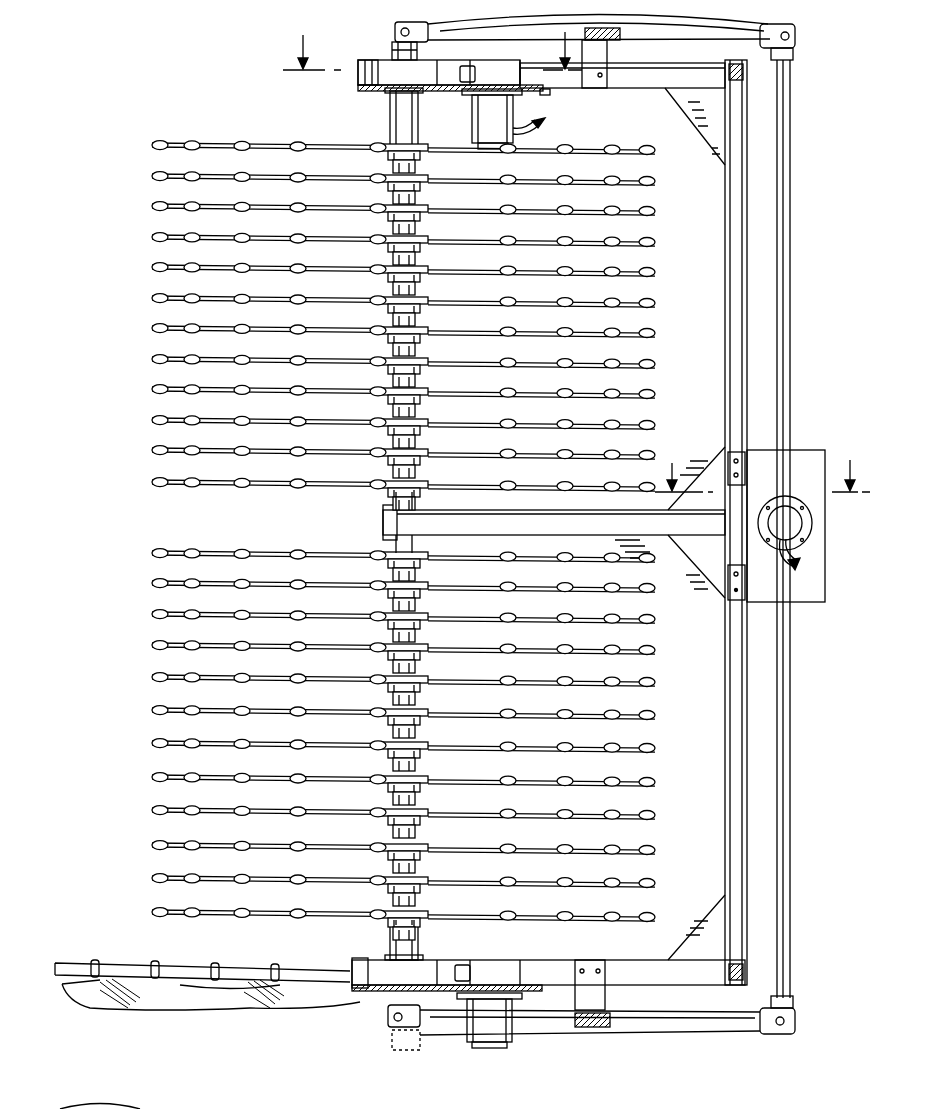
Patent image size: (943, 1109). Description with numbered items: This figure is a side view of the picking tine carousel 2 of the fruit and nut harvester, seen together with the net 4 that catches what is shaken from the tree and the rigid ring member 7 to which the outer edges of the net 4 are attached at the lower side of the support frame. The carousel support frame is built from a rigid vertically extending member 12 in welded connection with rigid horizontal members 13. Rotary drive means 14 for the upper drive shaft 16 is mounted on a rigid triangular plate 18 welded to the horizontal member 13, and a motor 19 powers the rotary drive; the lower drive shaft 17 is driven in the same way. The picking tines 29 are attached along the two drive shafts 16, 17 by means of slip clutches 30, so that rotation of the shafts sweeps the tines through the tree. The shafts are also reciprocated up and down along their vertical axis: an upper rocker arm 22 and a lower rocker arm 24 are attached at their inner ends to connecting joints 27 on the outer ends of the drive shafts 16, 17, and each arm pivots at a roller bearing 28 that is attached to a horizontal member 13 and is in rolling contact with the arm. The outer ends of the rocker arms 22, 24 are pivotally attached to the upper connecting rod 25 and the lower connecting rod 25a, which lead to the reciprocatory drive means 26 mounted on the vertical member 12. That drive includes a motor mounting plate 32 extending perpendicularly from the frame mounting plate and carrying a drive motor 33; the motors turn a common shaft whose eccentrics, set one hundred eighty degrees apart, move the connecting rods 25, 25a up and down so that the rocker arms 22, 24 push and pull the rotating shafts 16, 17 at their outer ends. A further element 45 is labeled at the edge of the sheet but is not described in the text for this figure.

The picking tine carousel 2 is at (80, 751).
The net 4 is at (185, 993).
The rigid ring member 7 is at (70, 963).
The vertically extending member 12 is at (726, 346).
The horizontal member 13 is at (645, 78).
The rotary drive means 14 is at (362, 54).
The drive shaft 16 is at (404, 122).
The drive shaft 17 is at (405, 942).
The rigid triangular plate 18 is at (368, 88).
The motor 19 is at (520, 113).
The rocker arm 22 is at (586, 74).
The rocker arm 24 is at (683, 1022).
The connecting rod 25 is at (792, 80).
The connecting rod 25a is at (790, 902).
The reciprocatory drive means 26 is at (800, 498).
The connecting joint 27 is at (397, 40).
The roller bearing 28 is at (675, 28).
The picking tine 29 is at (155, 207).
The slip clutch 30 is at (395, 138).
The motor mounting plate 32 is at (808, 455).
The drive motor 33 is at (793, 526).
The element 45 is at (32, 1108).